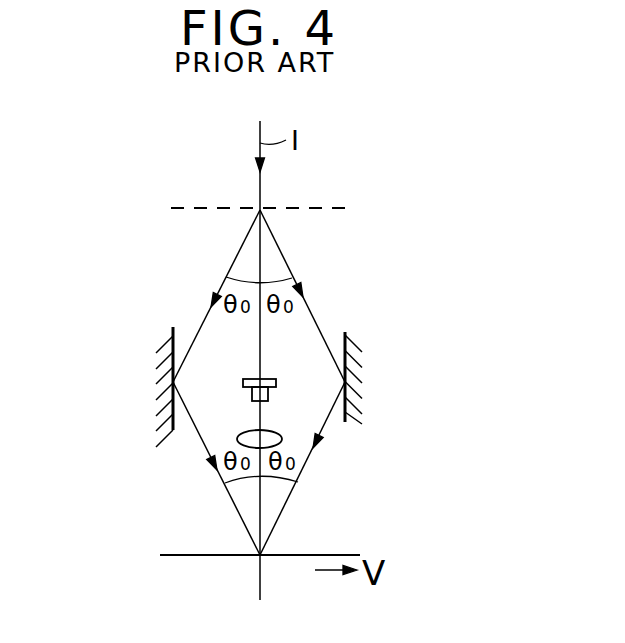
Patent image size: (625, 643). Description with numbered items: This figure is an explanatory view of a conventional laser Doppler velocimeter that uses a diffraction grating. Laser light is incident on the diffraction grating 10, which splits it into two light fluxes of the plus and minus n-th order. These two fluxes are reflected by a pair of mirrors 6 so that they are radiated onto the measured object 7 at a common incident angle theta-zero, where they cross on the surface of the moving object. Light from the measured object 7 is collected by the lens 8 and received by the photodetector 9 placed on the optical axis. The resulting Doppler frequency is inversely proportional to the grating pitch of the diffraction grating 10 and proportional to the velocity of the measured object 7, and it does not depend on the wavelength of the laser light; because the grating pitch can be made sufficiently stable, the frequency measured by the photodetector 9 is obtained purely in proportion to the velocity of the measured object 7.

The mirror 6 is at (150, 358).
The measured object 7 is at (180, 555).
The lens 8 is at (237, 438).
The photodetector 9 is at (246, 379).
The diffraction grating 10 is at (338, 208).